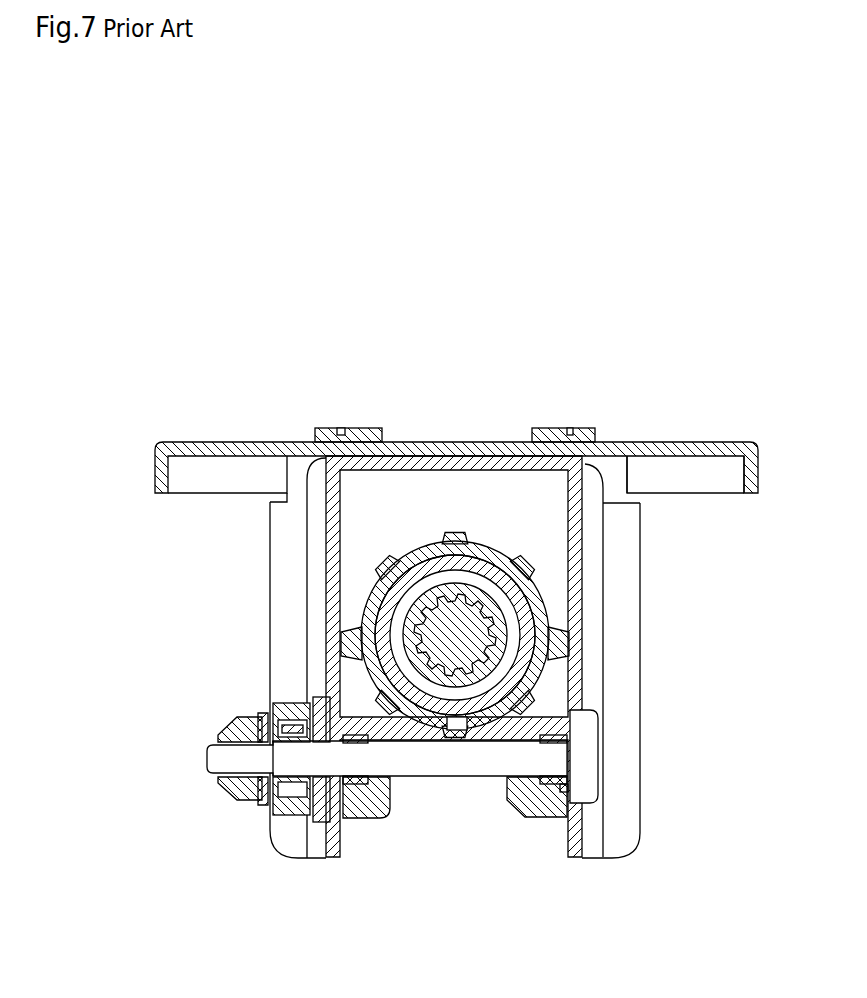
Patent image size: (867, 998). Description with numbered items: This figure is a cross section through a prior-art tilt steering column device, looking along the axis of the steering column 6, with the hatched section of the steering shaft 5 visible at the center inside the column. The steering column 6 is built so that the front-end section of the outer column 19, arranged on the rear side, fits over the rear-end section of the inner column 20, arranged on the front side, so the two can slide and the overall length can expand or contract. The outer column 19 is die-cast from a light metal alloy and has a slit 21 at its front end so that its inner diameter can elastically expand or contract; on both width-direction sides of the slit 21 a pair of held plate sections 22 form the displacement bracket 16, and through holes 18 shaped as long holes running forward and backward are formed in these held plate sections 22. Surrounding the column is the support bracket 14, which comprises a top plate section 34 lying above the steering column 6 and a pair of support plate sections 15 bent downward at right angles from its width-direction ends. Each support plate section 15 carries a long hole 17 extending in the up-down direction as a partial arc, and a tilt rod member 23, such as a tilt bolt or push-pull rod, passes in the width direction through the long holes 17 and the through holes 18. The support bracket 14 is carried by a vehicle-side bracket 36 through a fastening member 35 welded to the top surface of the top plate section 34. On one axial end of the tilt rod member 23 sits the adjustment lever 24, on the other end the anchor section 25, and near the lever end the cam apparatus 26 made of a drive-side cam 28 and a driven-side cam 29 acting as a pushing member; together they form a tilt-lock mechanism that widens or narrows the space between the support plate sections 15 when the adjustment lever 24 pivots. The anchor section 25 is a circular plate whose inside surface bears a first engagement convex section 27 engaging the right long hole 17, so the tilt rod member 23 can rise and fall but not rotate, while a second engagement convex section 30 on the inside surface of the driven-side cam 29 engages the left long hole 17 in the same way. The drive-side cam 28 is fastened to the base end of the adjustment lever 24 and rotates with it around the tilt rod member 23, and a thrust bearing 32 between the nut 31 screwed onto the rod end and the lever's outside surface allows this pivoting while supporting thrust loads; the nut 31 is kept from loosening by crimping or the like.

The worm shaft 5 is at (423, 618).
The steering column 6 is at (517, 546).
The support bracket 14 is at (457, 450).
The support plate sections 15 is at (332, 533).
The displacement bracket 16 is at (363, 818).
The long holes 17 is at (331, 857).
The through holes 18 is at (314, 810).
The outer column 19 is at (530, 587).
The inner column 20 is at (547, 617).
The slit 21 is at (481, 755).
The held plate sections 22 is at (390, 818).
The tilt rod member 23 is at (540, 705).
The adjustment lever 24 is at (273, 704).
The anchor section 25 is at (591, 752).
The cam apparatus 26 is at (270, 803).
The first engagement convex section 27 is at (568, 792).
The drive-side cam 28 is at (300, 700).
The driven-side cam 29 is at (322, 697).
The second engagement convex section 30 is at (382, 790).
The nut 31 is at (226, 732).
The thrust bearing 32 is at (226, 785).
The top plate section 34 is at (424, 457).
The fastening member 35 is at (582, 432).
The vehicle-side bracket 36 is at (705, 444).